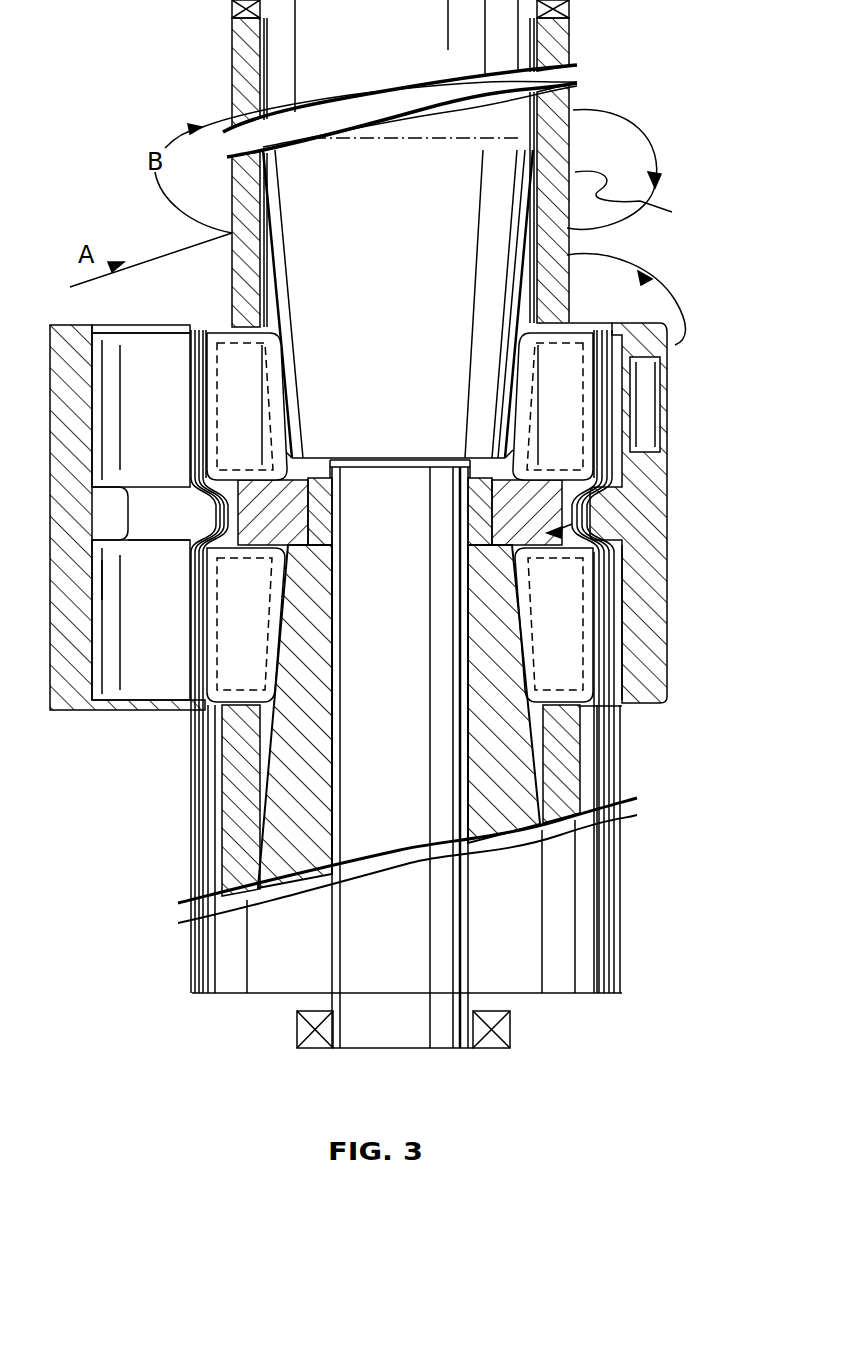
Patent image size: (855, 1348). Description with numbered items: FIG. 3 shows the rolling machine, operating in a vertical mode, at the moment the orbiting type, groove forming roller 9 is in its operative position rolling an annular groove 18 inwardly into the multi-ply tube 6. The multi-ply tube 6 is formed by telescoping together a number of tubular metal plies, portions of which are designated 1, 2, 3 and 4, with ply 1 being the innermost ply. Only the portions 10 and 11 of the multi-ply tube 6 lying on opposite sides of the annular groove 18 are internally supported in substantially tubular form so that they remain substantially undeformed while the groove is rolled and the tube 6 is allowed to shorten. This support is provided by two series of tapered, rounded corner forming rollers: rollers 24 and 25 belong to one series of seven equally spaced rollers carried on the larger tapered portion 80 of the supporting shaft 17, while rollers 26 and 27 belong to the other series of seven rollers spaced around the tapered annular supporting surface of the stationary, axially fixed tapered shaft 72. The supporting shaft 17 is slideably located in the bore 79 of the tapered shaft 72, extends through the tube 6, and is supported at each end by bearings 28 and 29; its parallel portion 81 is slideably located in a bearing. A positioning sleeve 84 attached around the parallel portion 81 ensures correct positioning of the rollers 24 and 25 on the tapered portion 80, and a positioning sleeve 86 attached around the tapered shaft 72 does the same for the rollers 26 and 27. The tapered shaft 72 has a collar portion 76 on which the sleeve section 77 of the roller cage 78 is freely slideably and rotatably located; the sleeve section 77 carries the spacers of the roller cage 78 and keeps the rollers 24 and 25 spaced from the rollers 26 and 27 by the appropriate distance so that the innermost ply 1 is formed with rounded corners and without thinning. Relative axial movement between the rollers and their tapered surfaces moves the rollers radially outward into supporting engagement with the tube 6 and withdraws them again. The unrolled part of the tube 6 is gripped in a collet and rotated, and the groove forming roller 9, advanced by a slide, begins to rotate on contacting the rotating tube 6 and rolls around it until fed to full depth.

The bearing 29 is at (566, 6).
The parallel portion 81 is at (578, 68).
The positioning sleeve 84 is at (638, 203).
The tapered portion 80 is at (465, 229).
The tapered roller 24 is at (245, 330).
The tapered roller 25 is at (598, 330).
The portion of the multi-ply tube 10 is at (190, 402).
The multi-ply tube 6 is at (178, 358).
The tubular metal ply 4 is at (193, 328).
The tubular metal ply 3 is at (198, 328).
The tubular metal ply 2 is at (203, 328).
The innermost ply 1 is at (218, 300).
The annular groove 18 is at (183, 527).
The portion of the multi-ply tube 11 is at (190, 620).
The supporting shaft 17 is at (414, 716).
The tapered roller 27 is at (212, 705).
The positioning sleeve 86 is at (228, 838).
The sleeve section 77 is at (598, 537).
The roller cage 78 is at (625, 535).
The groove forming roller 9 is at (657, 618).
The collar portion 76 is at (603, 707).
The tapered roller 26 is at (545, 712).
The tapered shaft 72 is at (617, 866).
The bore 79 is at (478, 800).
The bearing 28 is at (512, 1030).